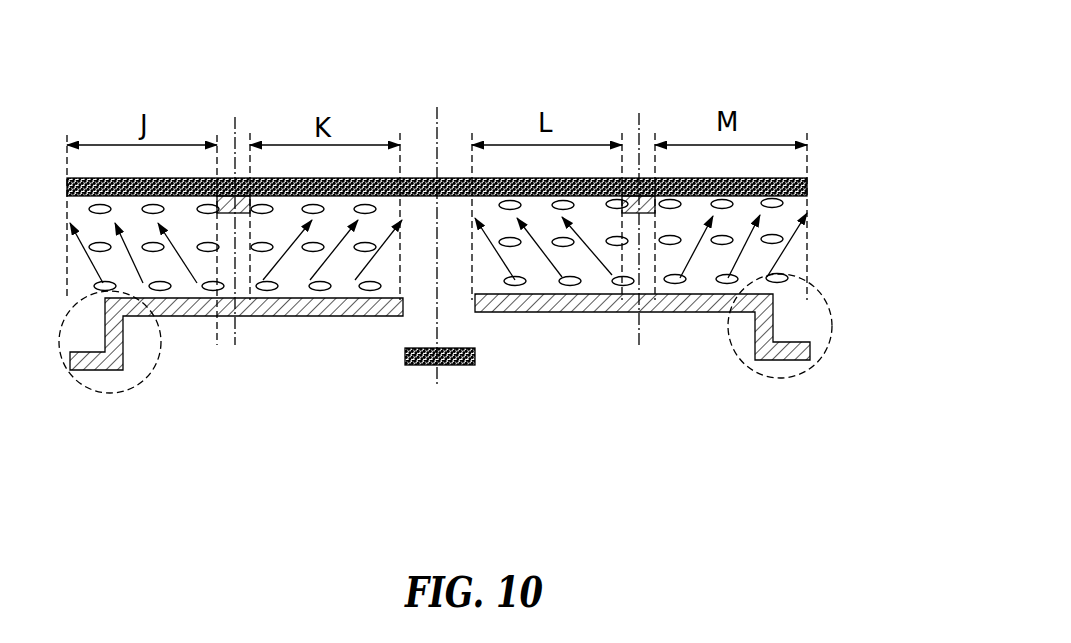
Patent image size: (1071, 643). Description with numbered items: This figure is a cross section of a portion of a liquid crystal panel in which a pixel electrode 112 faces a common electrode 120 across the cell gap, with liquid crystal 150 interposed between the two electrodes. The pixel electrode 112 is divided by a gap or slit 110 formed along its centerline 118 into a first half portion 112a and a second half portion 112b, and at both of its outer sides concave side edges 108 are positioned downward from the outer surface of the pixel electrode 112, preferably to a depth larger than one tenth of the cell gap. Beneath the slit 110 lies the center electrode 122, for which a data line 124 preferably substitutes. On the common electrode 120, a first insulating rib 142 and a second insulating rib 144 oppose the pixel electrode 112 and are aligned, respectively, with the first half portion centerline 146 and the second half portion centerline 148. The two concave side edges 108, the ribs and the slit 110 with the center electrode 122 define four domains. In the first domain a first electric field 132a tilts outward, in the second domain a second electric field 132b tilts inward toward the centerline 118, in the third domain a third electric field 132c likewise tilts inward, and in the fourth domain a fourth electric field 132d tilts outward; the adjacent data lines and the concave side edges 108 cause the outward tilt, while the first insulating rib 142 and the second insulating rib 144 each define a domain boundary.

The concave side edge 108 is at (102, 390).
The gap or slit 110 is at (455, 308).
The pixel electrode 112 is at (440, 423).
The first half portion 112a is at (317, 317).
The second half portion 112b is at (642, 378).
The centerline 118 is at (437, 118).
The common electrode 120 is at (807, 180).
The center electrode 122 is at (437, 394).
The data line 124 is at (425, 365).
The first electric field 132a is at (187, 270).
The second electric field 132b is at (373, 262).
The third electric field 132c is at (553, 262).
The fourth electric field 132d is at (689, 258).
The first insulating rib 142 is at (232, 178).
The second insulating rib 144 is at (650, 182).
The first half portion centerline 146 is at (237, 120).
The second half portion centerline 148 is at (637, 125).
The liquid crystal 150 is at (621, 286).